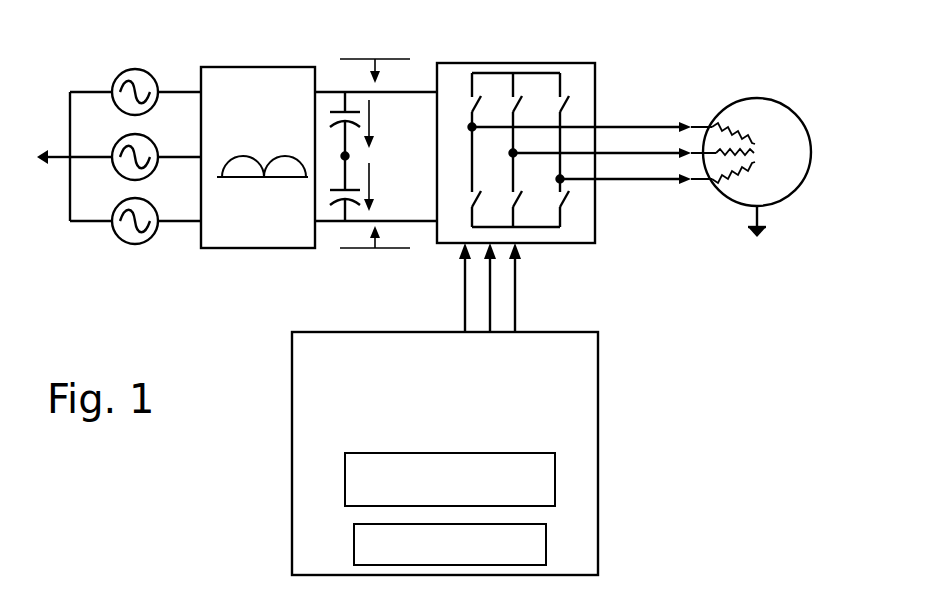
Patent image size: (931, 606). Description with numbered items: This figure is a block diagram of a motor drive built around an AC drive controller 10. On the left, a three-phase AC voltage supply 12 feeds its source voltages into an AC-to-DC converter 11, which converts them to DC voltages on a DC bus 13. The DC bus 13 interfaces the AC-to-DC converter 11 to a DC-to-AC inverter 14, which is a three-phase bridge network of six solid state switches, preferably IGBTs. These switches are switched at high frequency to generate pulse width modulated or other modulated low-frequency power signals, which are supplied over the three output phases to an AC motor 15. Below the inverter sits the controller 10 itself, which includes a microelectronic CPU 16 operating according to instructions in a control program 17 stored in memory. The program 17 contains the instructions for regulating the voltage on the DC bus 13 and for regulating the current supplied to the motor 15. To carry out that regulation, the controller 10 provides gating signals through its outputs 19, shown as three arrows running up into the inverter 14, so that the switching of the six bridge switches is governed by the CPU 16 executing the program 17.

The AC drive controller 10 is at (645, 395).
The AC-to-DC converter 11 is at (238, 65).
The AC voltage supply 12 is at (145, 72).
The DC bus 13 is at (388, 57).
The DC-to-AC inverter 14 is at (552, 63).
The AC motor 15 is at (757, 99).
The CPU 16 is at (546, 540).
The control program 17 is at (555, 488).
The outputs 19 is at (467, 297).